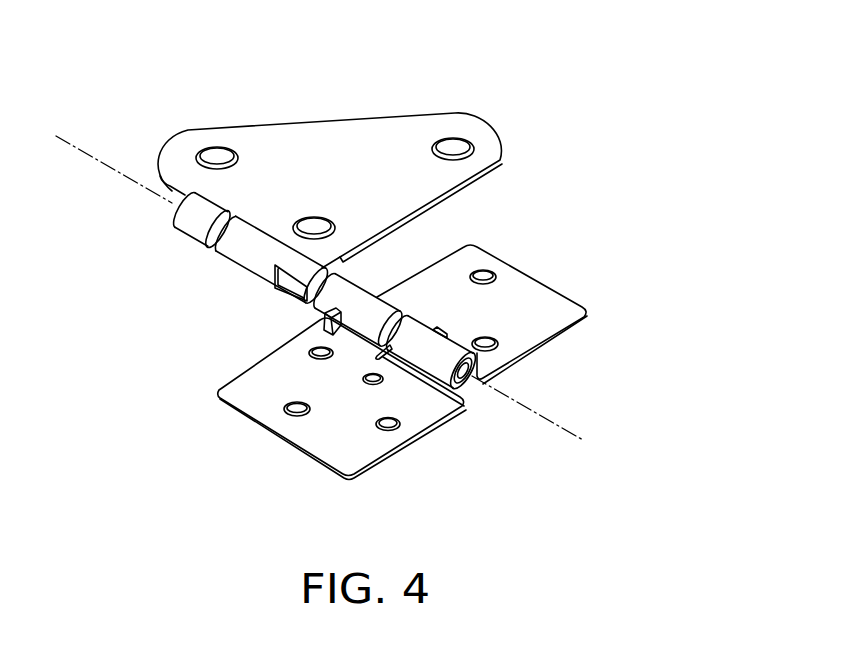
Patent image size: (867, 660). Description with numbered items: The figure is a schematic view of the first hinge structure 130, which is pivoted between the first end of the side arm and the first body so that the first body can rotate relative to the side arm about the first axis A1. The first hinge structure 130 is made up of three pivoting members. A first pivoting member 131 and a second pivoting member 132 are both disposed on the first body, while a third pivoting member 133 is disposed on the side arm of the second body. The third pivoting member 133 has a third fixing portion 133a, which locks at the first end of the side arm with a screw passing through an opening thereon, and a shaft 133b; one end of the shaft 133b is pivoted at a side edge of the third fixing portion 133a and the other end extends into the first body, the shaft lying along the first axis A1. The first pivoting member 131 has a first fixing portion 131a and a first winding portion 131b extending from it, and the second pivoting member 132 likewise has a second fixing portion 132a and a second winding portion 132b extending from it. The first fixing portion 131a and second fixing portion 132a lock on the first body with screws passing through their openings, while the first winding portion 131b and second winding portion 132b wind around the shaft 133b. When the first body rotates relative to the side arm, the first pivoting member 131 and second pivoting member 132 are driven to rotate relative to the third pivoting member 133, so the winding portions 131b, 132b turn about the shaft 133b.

The first hinge structure 130 is at (482, 85).
The first pivoting member 131 is at (120, 332).
The first fixing portion 131a is at (258, 404).
The first winding portion 131b is at (355, 303).
The second pivoting member 132 is at (672, 277).
The second fixing portion 132a is at (537, 310).
The second winding portion 132b is at (440, 343).
The third pivoting member 133 is at (363, 52).
The third fixing portion 133a is at (345, 150).
The shaft 133b is at (257, 233).
The first axis A1 is at (62, 136).